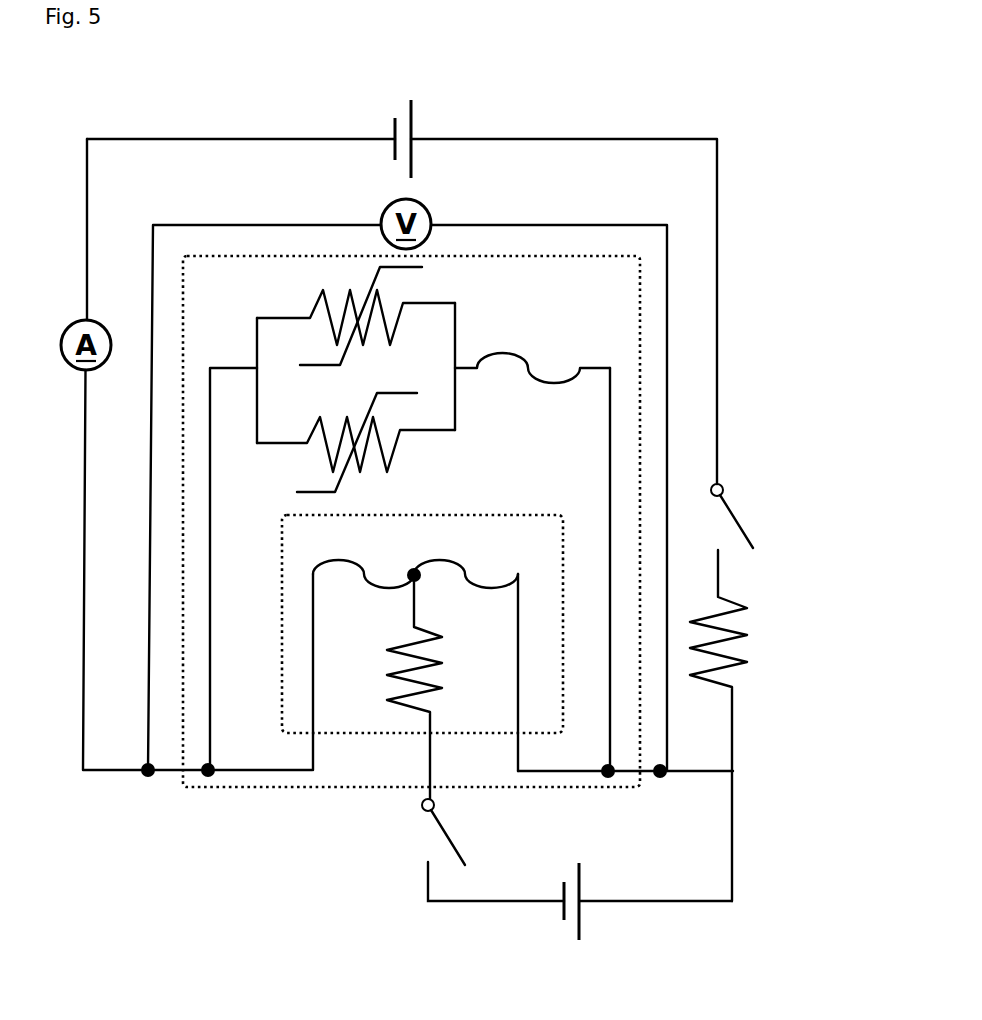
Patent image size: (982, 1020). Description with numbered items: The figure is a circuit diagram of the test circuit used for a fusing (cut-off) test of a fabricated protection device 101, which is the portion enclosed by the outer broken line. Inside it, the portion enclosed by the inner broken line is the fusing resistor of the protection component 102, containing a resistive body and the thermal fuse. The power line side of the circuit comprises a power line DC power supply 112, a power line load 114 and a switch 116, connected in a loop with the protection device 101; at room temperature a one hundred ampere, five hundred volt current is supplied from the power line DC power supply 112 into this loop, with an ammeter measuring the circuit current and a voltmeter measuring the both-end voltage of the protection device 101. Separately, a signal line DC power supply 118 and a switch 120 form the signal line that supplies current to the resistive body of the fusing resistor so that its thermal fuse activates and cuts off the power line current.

The protection device 101 is at (411, 521).
The protection component 102 is at (422, 657).
The power line DC power supply 112 is at (437, 133).
The power line load 114 is at (747, 725).
The switch 116 is at (757, 516).
The signal line DC power supply 118 is at (648, 900).
The switch 120 is at (460, 850).